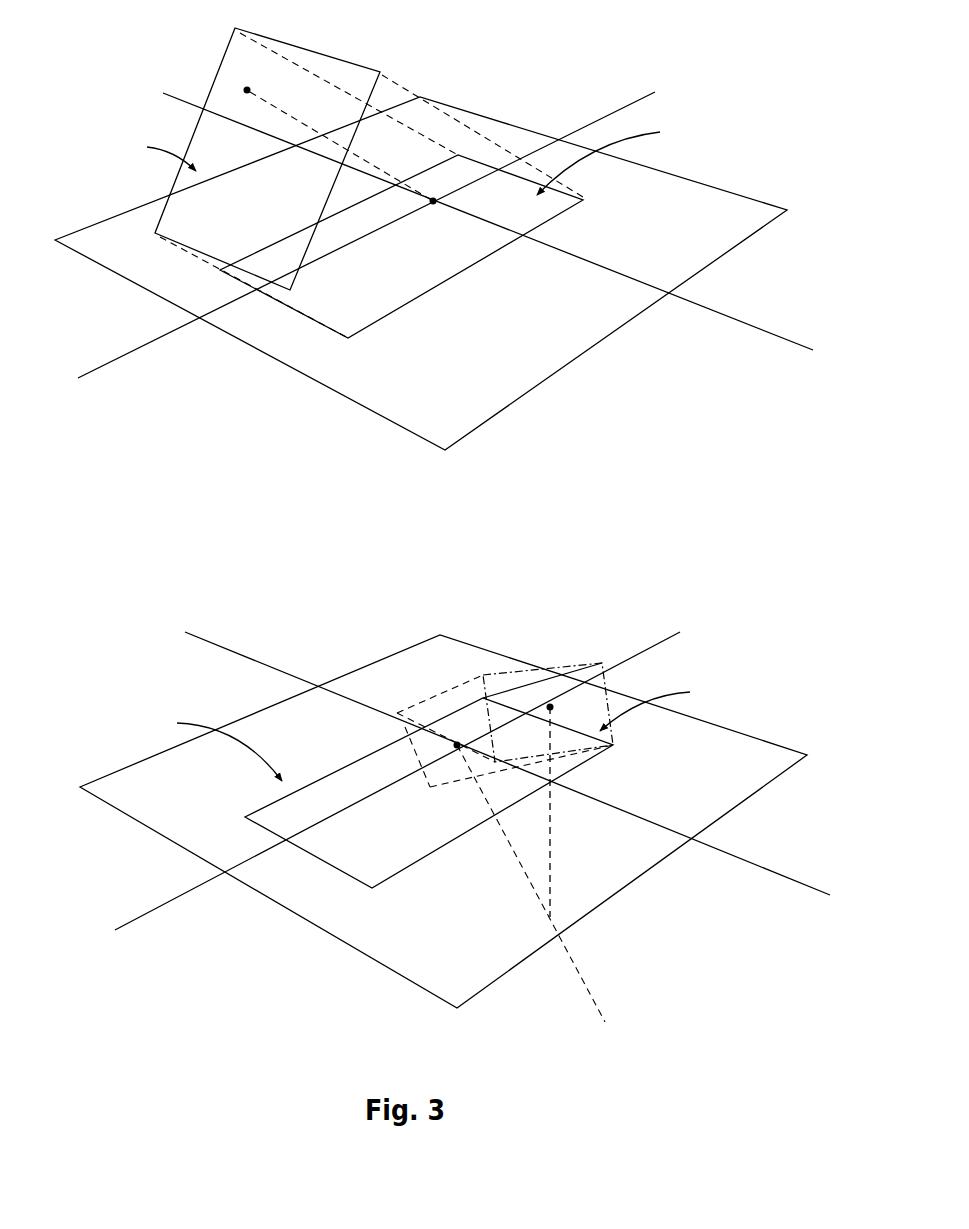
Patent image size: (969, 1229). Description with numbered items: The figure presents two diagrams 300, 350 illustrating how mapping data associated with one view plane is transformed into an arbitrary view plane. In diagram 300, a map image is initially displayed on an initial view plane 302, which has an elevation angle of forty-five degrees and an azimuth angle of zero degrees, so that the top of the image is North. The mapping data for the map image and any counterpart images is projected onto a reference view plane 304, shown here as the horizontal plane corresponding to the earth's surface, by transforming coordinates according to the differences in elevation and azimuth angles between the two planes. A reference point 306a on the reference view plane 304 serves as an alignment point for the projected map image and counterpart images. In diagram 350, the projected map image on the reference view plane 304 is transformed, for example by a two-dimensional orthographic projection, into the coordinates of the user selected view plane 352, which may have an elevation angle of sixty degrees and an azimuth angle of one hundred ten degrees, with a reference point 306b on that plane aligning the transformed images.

The diagram 300 is at (58, 1).
The initial view plane 302 is at (215, 75).
The reference view plane 304 is at (618, 316).
The reference point 306a is at (436, 199).
The reference point 306b is at (548, 703).
The diagram 350 is at (63, 573).
The user selected view plane 352 is at (608, 690).